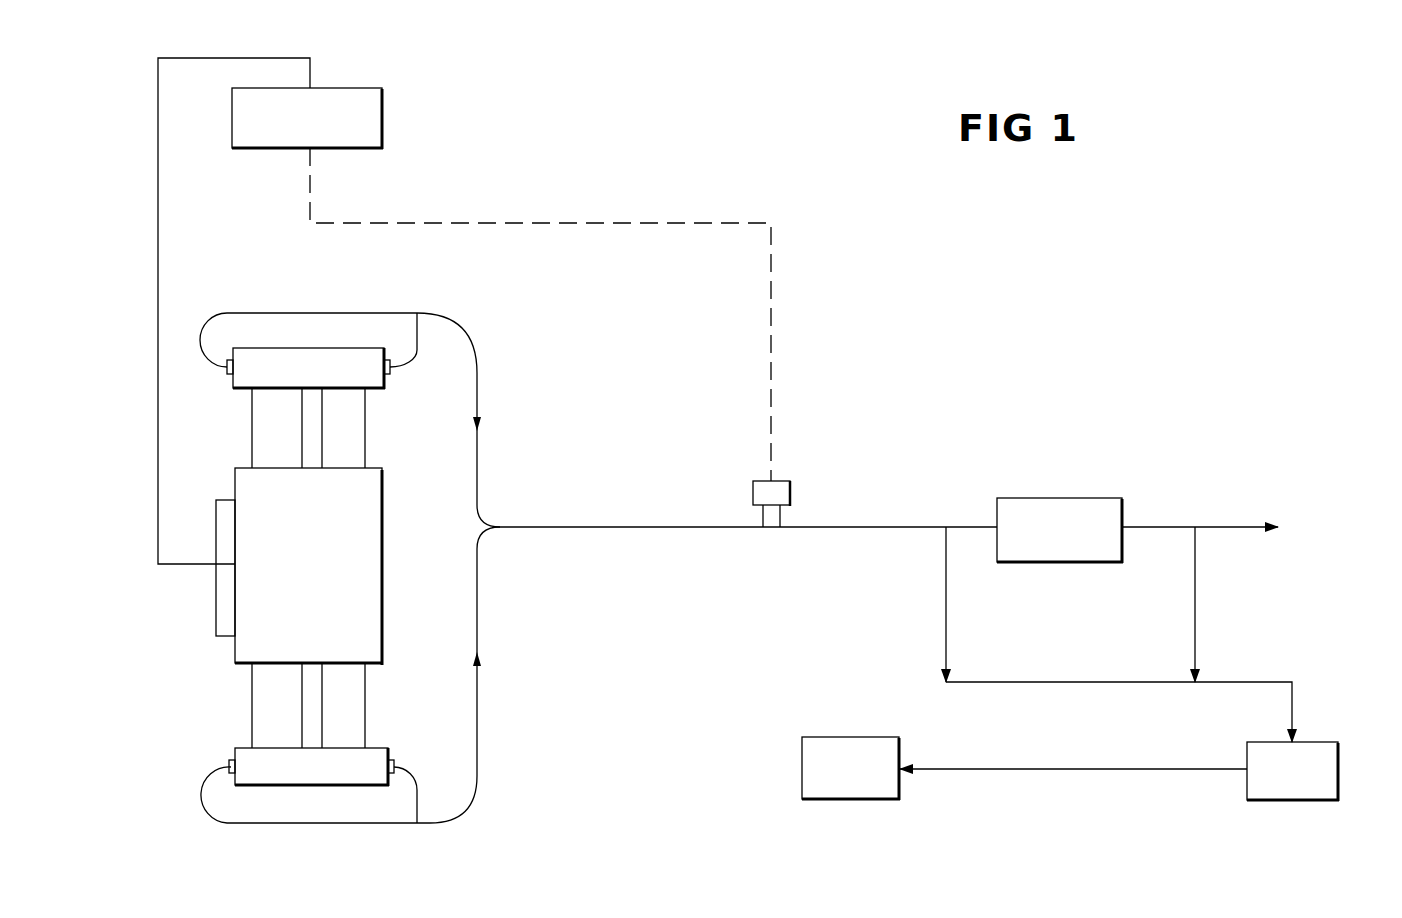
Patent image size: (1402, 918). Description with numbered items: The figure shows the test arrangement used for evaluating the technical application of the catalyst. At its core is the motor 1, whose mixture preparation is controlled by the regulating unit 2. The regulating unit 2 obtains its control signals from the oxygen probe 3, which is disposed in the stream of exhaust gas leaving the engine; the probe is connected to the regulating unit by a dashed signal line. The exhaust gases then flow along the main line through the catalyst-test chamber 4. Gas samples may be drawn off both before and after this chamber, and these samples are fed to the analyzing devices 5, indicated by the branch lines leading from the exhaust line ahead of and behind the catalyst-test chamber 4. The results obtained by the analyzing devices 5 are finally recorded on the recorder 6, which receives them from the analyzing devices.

The motor 1 is at (294, 582).
The regulating unit 2 is at (294, 131).
The oxygen probe 3 is at (778, 504).
The catalyst-test chamber 4 is at (1050, 540).
The analyzing devices 5 is at (1282, 783).
The recorder 6 is at (840, 781).